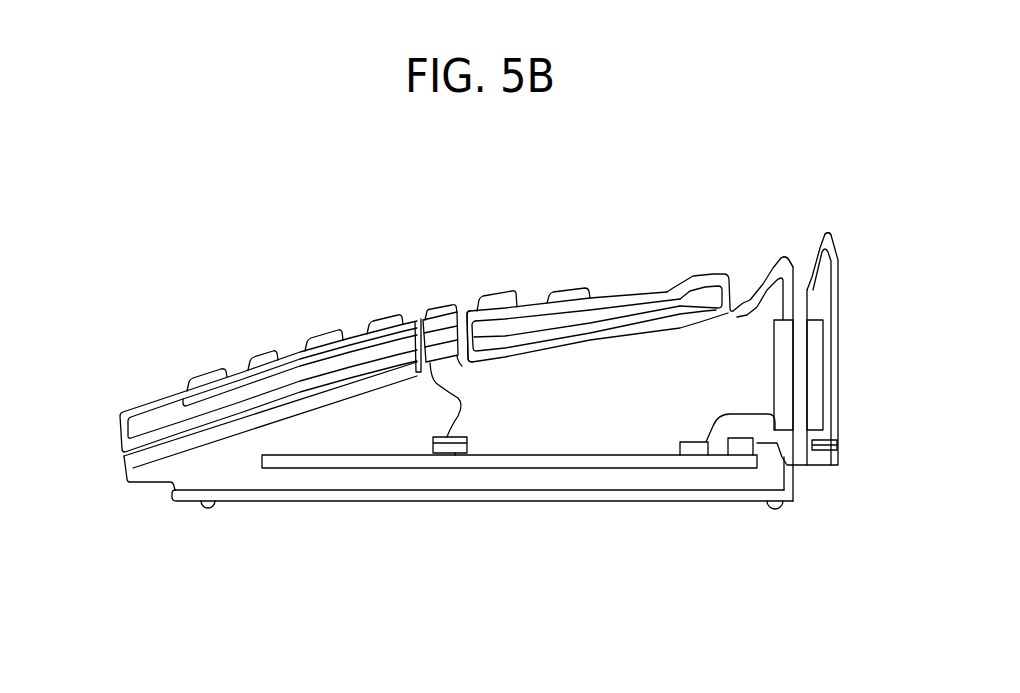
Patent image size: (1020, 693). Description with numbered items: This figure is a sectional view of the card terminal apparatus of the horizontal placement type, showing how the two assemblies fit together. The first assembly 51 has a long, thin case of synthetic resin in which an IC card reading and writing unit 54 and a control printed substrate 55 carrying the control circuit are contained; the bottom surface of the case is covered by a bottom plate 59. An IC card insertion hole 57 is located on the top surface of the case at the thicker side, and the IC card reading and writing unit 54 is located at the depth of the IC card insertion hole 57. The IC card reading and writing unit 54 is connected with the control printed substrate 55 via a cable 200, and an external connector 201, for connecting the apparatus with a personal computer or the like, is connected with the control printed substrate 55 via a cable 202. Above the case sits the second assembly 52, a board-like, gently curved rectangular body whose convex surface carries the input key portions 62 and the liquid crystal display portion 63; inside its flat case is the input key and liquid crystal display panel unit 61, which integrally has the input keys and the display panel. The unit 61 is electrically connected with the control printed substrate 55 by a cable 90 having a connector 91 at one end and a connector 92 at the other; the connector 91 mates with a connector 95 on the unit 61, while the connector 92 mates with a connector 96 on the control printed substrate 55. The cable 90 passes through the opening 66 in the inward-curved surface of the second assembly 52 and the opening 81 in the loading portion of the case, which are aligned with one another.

The first assembly 51 is at (130, 491).
The second assembly 52 is at (111, 407).
The IC card reading and writing unit 54 is at (786, 362).
The control printed substrate 55 is at (368, 468).
The IC card insertion hole 57 is at (802, 258).
The bottom plate 59 is at (290, 502).
The input key and liquid crystal display panel unit 61 is at (345, 338).
The input key portions 62 is at (266, 350).
The liquid crystal display portion 63 is at (645, 283).
The opening 66 is at (417, 318).
The opening 81 is at (421, 372).
The cable 90 is at (461, 400).
The connector 91 is at (458, 362).
The connector 92 is at (467, 438).
The connector 95 is at (448, 338).
The connector 96 is at (455, 453).
The cable 200 is at (730, 414).
The external connector 201 is at (838, 443).
The cable 202 is at (794, 468).